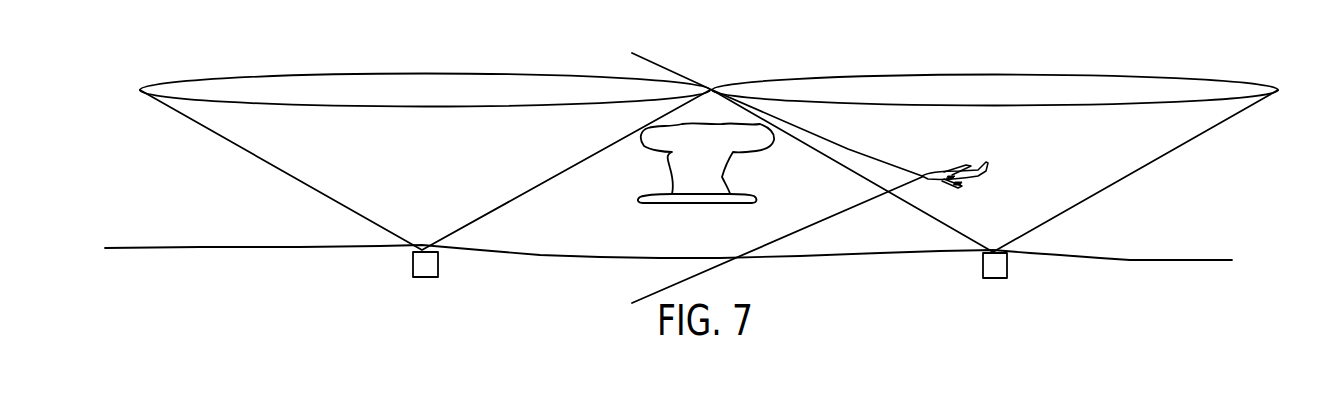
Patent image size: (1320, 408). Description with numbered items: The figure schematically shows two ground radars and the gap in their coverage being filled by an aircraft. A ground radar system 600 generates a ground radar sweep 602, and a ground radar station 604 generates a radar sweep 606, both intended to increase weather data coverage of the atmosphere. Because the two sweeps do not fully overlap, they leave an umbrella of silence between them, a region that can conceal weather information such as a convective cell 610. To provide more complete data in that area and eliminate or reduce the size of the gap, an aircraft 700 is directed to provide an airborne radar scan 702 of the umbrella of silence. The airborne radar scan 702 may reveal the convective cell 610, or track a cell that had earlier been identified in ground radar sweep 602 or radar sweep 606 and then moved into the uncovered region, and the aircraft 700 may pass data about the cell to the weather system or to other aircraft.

The ground radar system 600 is at (413, 262).
The ground radar sweep 602 is at (282, 158).
The ground radar station 604 is at (983, 263).
The radar sweep 606 is at (1132, 162).
The convective cell 610 is at (717, 170).
The aircraft 700 is at (933, 173).
The airborne radar scan 702 is at (848, 150).